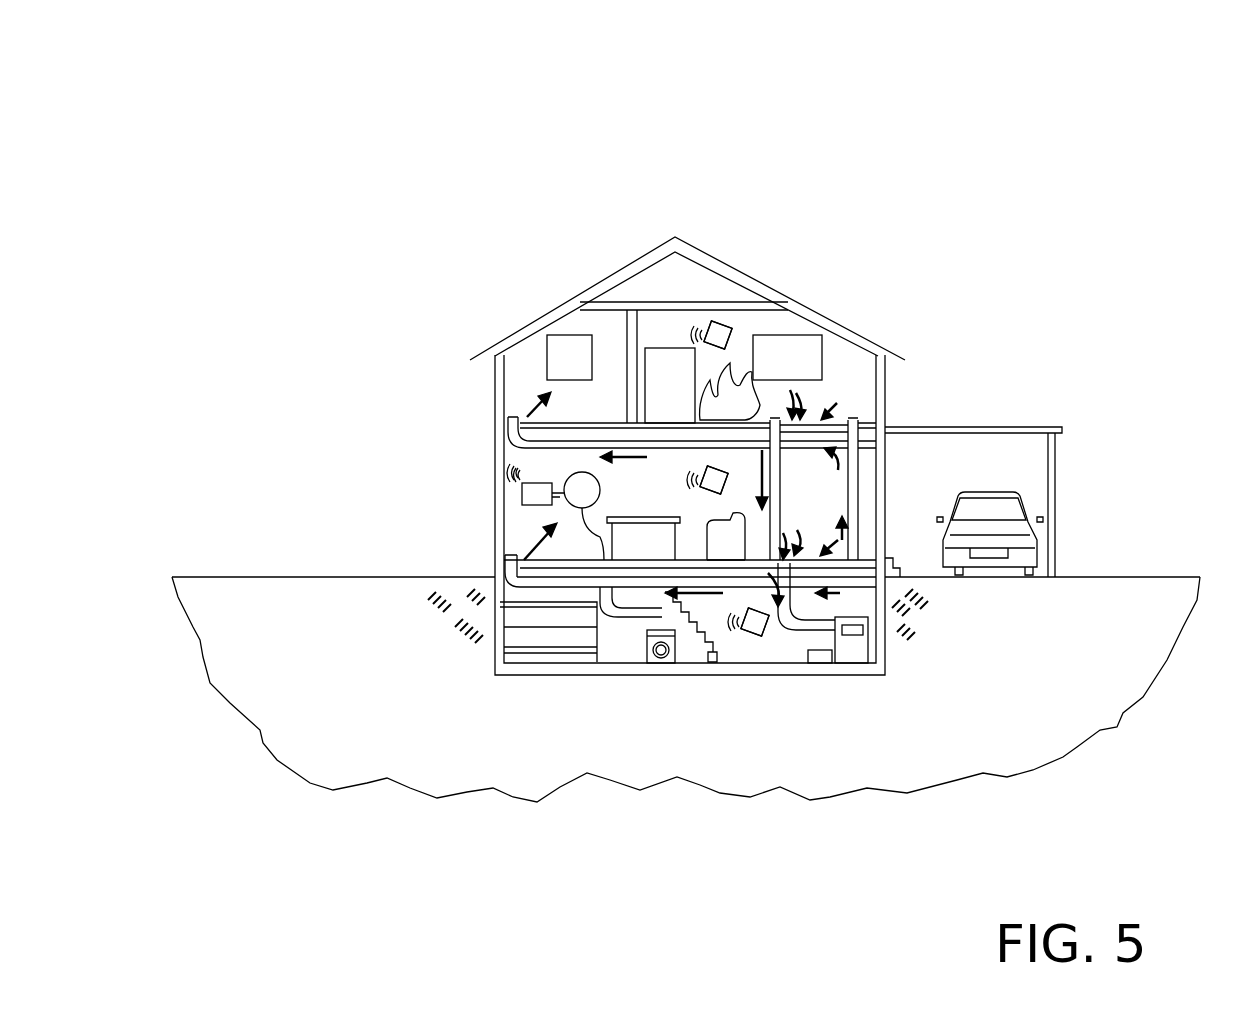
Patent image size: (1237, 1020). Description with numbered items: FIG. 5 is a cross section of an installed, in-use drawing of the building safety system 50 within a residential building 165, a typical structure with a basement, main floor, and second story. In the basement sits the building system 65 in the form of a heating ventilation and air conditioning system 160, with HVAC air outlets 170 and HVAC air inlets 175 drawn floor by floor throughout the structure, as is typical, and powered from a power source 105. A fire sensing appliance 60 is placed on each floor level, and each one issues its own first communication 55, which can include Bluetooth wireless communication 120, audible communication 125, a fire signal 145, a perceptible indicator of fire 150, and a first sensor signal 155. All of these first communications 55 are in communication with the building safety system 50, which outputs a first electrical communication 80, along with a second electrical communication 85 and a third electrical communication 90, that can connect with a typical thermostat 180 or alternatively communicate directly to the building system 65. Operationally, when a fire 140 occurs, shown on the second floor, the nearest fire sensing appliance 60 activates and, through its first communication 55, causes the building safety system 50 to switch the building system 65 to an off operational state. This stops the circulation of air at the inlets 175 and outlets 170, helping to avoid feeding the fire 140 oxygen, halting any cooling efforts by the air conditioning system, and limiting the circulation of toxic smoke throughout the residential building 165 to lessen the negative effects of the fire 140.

The building safety system 50 is at (505, 483).
The first communication 55 is at (585, 500).
The fire sensing appliance 60 is at (728, 323).
The building system 65 is at (1022, 692).
The first electrical communication 80 is at (498, 685).
The second electrical communication 85 is at (522, 500).
The third electrical communication 90 is at (652, 632).
The power source 105 is at (1022, 692).
The Bluetooth wireless communication 120 is at (585, 500).
The audible communication 125 is at (585, 500).
The fire 140 is at (745, 388).
The fire signal 145 is at (545, 500).
The perceptible indicator of fire 150 is at (585, 500).
The first sensor signal 155 is at (657, 815).
The heating ventilation and air conditioning system 160 is at (860, 652).
The residential building 165 is at (890, 343).
The HVAC air outlet 170 is at (530, 413).
The HVAC air inlet 175 is at (830, 400).
The thermostat 180 is at (577, 508).